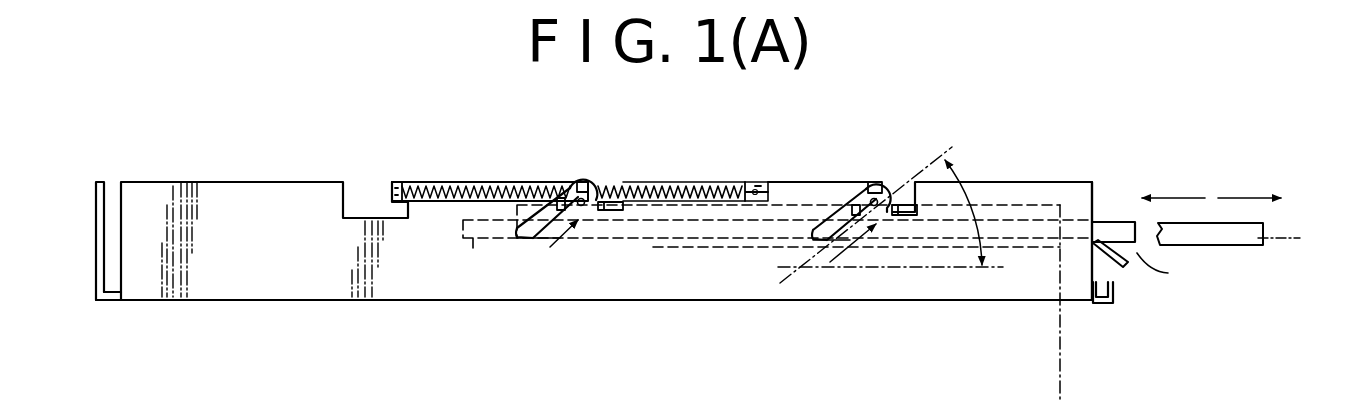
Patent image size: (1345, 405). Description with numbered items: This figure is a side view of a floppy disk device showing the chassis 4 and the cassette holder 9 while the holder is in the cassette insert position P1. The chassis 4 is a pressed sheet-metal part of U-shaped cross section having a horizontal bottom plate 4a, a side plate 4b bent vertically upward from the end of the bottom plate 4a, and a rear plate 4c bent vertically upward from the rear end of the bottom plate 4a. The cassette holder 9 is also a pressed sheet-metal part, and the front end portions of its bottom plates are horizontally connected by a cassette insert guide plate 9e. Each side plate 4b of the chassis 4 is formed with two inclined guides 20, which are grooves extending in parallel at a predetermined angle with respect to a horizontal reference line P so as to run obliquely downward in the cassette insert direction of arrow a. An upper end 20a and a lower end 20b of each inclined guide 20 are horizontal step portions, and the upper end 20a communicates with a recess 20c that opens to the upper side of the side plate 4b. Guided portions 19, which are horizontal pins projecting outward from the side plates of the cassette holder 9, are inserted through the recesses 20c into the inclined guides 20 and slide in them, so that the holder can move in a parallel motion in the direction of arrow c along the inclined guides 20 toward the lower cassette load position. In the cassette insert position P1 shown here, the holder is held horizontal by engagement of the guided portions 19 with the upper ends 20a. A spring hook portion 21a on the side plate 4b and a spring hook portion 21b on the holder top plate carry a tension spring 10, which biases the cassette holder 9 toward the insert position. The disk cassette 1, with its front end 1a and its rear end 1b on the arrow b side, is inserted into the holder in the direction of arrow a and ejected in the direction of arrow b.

The disk cassette 1 is at (1192, 235).
The front end of the cassette 1a is at (473, 235).
The rear end of the cassette 1b is at (1118, 227).
The chassis 4 is at (247, 272).
The bottom plate 4a is at (110, 293).
The side plate 4b is at (206, 198).
The rear plate 4c is at (97, 230).
The cassette holder 9 is at (1008, 205).
The cassette insert guide plate 9e is at (1128, 266).
The tension spring 10 is at (450, 183).
The guided portion 19 is at (580, 191).
The inclined guide 20 is at (538, 227).
The upper end of the inclined guide 20a is at (907, 215).
The lower end of the inclined guide 20b is at (524, 238).
The recess 20c is at (620, 203).
The spring hook portion 21a is at (391, 186).
The spring hook portion 21b is at (763, 183).
The arrow c is at (562, 245).
The horizontal reference line P is at (997, 270).
The cassette insert position P1 is at (1212, 250).
The arrow a is at (1175, 198).
The arrow b is at (1247, 198).